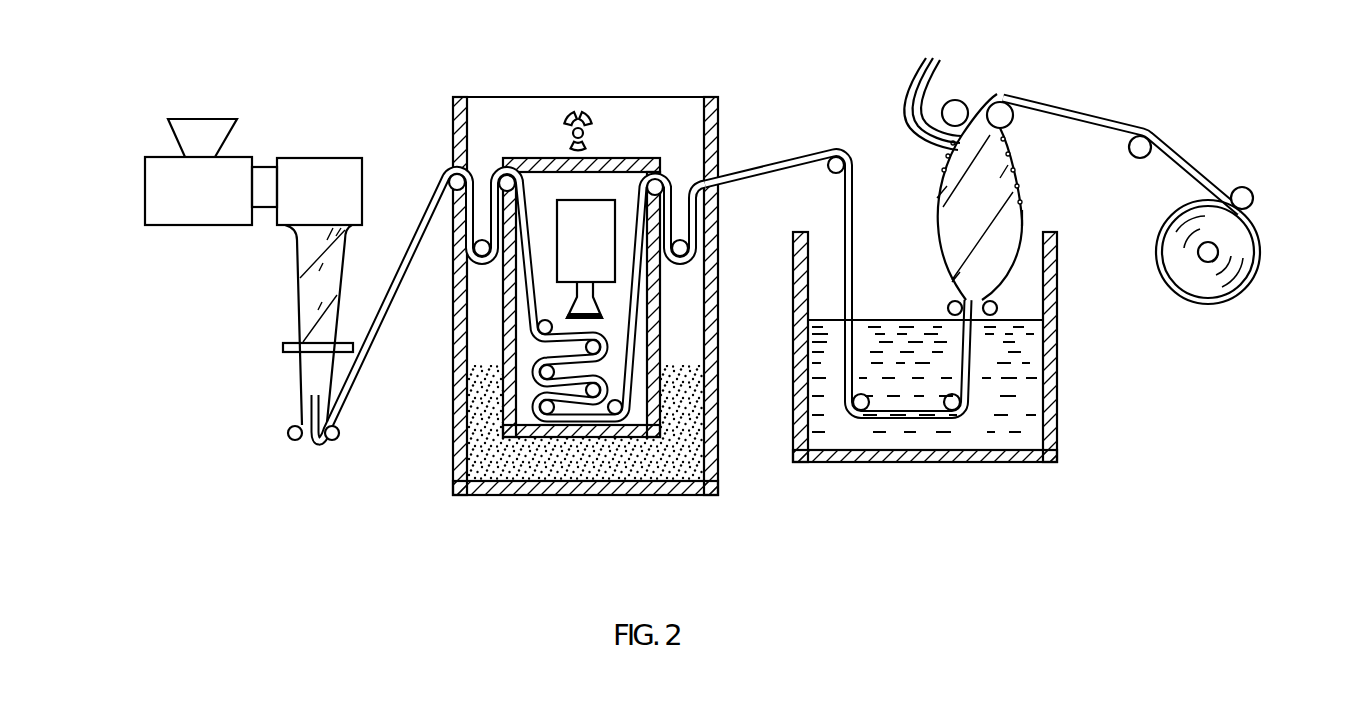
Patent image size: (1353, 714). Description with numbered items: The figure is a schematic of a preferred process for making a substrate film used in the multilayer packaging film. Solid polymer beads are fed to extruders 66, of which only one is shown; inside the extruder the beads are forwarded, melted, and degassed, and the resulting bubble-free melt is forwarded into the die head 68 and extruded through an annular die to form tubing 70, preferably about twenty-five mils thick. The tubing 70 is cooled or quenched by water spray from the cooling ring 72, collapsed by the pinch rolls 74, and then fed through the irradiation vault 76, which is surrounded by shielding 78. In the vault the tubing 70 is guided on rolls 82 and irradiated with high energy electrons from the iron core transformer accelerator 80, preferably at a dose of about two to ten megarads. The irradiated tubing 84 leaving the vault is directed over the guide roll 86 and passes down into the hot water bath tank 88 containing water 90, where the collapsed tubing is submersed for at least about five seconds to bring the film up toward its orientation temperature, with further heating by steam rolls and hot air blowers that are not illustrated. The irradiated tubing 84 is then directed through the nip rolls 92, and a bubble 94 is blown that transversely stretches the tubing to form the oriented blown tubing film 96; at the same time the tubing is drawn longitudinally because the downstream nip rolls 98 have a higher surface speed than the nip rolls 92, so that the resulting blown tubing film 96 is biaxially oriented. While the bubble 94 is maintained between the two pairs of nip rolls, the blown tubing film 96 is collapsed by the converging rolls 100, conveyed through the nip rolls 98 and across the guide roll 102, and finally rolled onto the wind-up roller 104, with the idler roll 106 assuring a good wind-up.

The extruder 66 is at (165, 188).
The die head 68 is at (315, 178).
The tubing 70 is at (295, 253).
The cooling ring 72 is at (283, 341).
The pinch rolls 74 is at (288, 433).
The irradiation vault 76 is at (663, 353).
The shielding 78 is at (540, 472).
The iron core transformer accelerator 80 is at (597, 197).
The rolls 82 is at (540, 406).
The irradiated tubing 84 is at (743, 167).
The guide roll 86 is at (828, 158).
The hot water bath tank 88 is at (1058, 410).
The water 90 is at (1058, 348).
The nip rolls 92 is at (950, 303).
The bubble 94 is at (1023, 193).
The oriented blown tubing film 96 is at (1038, 217).
The nip rolls 98 is at (1006, 103).
The converging rolls 100 is at (936, 87).
The guide roll 102 is at (1152, 128).
The wind-up roller 104 is at (1240, 283).
The idler roll 106 is at (1254, 194).